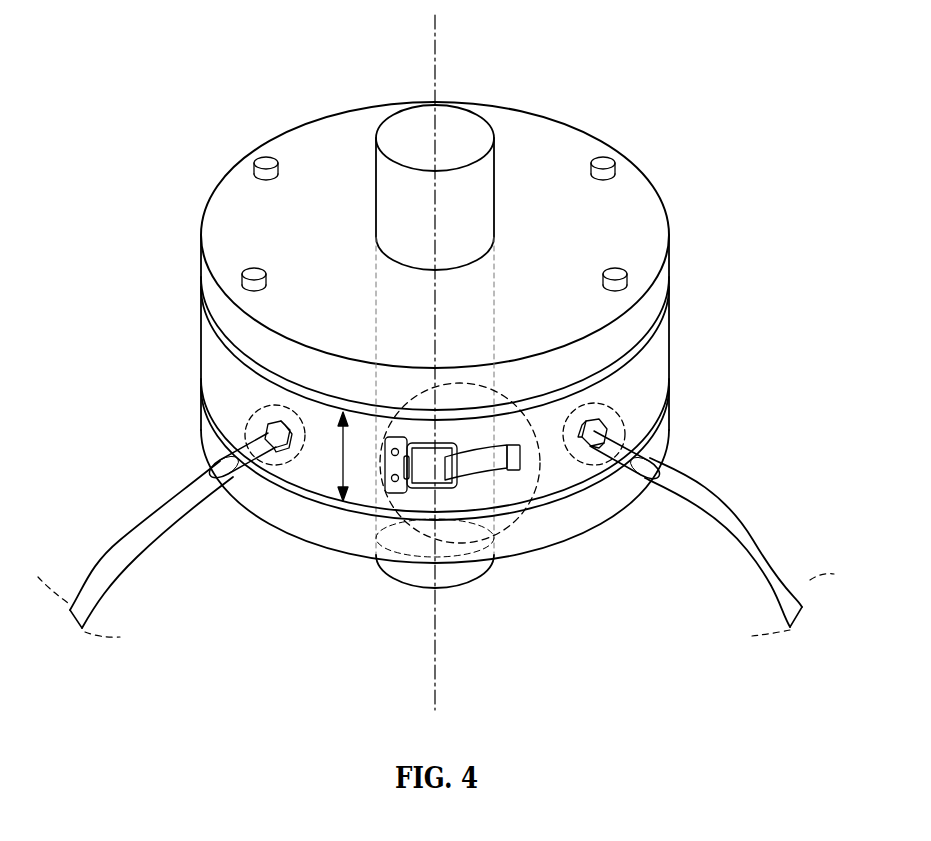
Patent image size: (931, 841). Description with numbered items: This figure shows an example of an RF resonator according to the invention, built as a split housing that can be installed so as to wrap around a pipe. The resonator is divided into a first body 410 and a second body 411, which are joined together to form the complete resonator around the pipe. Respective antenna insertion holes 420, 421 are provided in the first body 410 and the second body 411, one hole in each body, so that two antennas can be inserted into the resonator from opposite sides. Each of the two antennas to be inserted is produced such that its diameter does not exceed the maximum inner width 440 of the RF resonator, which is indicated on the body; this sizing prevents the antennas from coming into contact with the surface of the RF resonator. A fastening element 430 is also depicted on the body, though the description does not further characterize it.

The first body 410 is at (306, 146).
The second body 411 is at (547, 146).
The antenna insertion hole 420 is at (267, 405).
The antenna insertion hole 421 is at (606, 406).
The toggle clamp 430 is at (521, 508).
The maximum inner width 440 is at (343, 458).